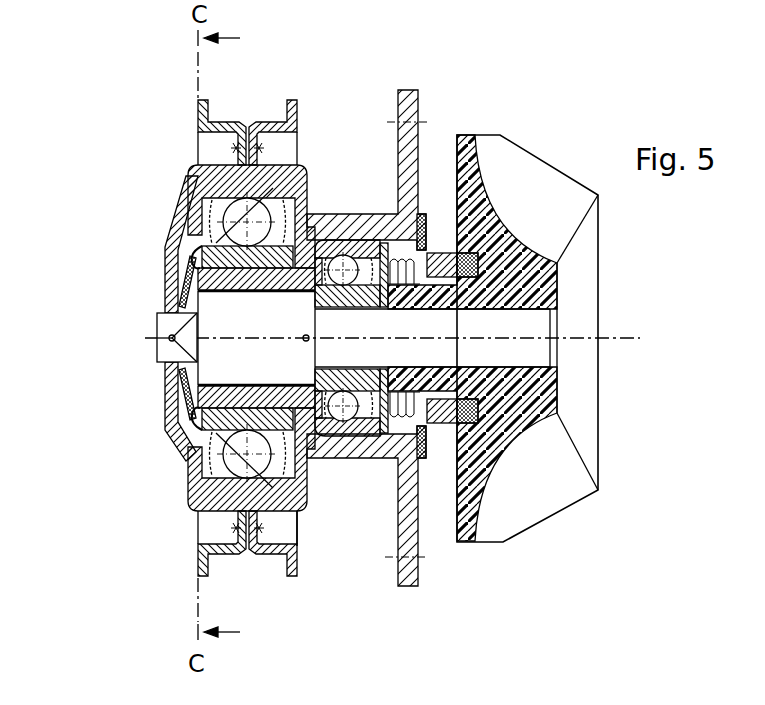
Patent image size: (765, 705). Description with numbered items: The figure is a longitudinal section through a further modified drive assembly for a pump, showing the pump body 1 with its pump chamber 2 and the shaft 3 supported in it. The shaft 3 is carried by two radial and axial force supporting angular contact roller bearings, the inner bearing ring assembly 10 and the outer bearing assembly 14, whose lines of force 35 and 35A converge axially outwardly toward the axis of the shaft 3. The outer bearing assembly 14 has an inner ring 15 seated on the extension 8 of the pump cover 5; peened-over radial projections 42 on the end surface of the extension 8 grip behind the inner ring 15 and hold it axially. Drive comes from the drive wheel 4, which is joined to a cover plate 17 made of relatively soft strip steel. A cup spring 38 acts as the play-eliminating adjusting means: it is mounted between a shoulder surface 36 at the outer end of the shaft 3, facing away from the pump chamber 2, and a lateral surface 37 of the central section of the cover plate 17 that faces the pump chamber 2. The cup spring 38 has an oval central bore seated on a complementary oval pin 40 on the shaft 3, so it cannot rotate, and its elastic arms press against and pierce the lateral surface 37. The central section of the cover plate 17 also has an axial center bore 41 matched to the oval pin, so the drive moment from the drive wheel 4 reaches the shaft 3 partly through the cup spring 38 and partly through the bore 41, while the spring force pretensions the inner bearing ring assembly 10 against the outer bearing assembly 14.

The pump body 1 is at (558, 193).
The pump chamber 2 is at (436, 157).
The shaft 3 is at (532, 363).
The drive wheel 4 is at (198, 113).
The pump cover 5 is at (404, 450).
The pump cover extension 8 is at (262, 398).
The inner bearing ring assembly 10 is at (350, 244).
The outer bearing assembly 14 is at (188, 480).
The inner ring 15 is at (295, 511).
The cover plate 17 is at (190, 170).
The line of force 35 is at (328, 240).
The line of force 35A is at (185, 205).
The shoulder surface 36 is at (163, 370).
The lateral surface 37 is at (188, 453).
The cup spring 38 is at (167, 258).
The pin 40 is at (170, 352).
The axial center bore 41 is at (157, 333).
The radial projections 42 is at (166, 293).